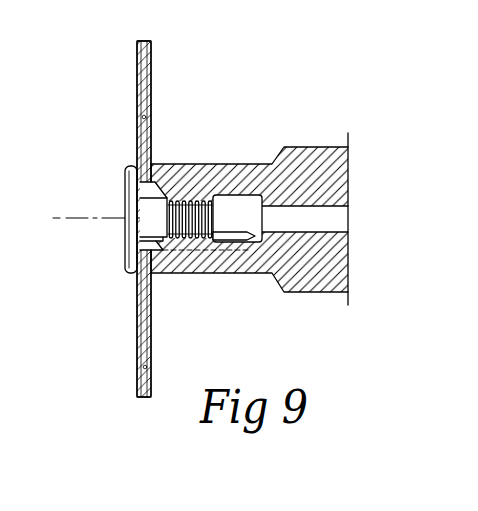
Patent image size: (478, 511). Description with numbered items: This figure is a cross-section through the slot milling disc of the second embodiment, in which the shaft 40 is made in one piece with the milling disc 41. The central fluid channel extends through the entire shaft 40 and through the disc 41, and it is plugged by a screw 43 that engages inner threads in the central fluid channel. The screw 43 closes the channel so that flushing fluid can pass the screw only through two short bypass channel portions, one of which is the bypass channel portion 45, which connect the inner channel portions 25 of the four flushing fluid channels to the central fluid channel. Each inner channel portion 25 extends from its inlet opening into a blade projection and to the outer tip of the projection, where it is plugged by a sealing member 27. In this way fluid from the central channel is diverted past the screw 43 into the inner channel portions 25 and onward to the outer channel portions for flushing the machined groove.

The inner channel portion 25 is at (143, 322).
The sealing member 27 is at (150, 42).
The shaft 40 is at (320, 150).
The milling disc 41 is at (140, 300).
The screw 43 is at (140, 213).
The bypass channel portion 45 is at (227, 233).